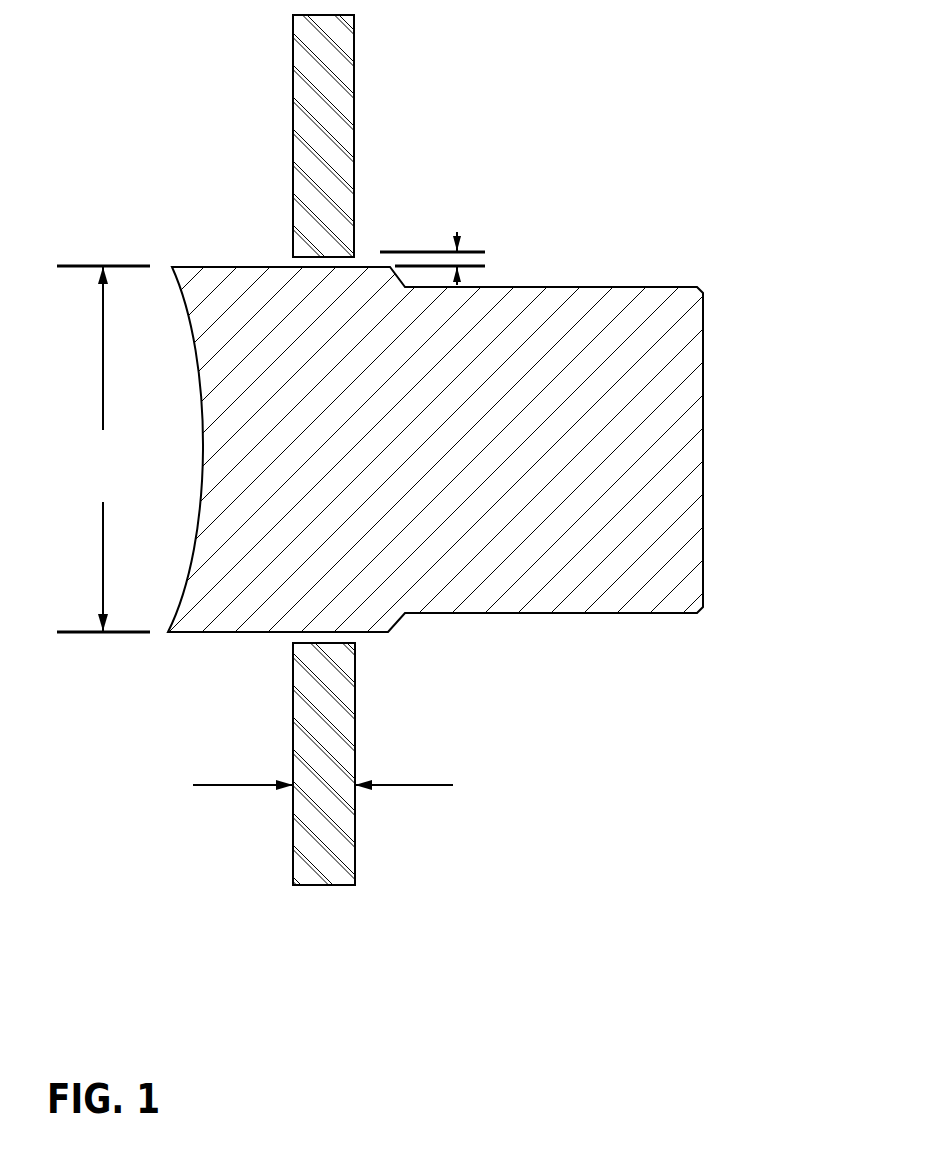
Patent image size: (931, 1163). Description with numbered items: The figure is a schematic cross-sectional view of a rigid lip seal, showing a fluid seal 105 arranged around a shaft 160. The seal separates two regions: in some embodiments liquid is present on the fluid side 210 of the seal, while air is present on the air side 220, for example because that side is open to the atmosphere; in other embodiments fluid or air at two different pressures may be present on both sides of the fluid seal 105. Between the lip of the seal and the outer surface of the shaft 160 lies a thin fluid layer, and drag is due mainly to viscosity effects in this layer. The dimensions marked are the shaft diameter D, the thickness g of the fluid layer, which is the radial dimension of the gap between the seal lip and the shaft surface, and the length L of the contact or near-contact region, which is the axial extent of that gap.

The fluid seal 105 is at (368, 43).
The shaft 160 is at (706, 438).
The fluid side 210 is at (247, 168).
The air side 220 is at (448, 168).
The shaft diameter D is at (103, 449).
The length of the contact region L is at (339, 787).
The thickness of the fluid layer g is at (432, 238).